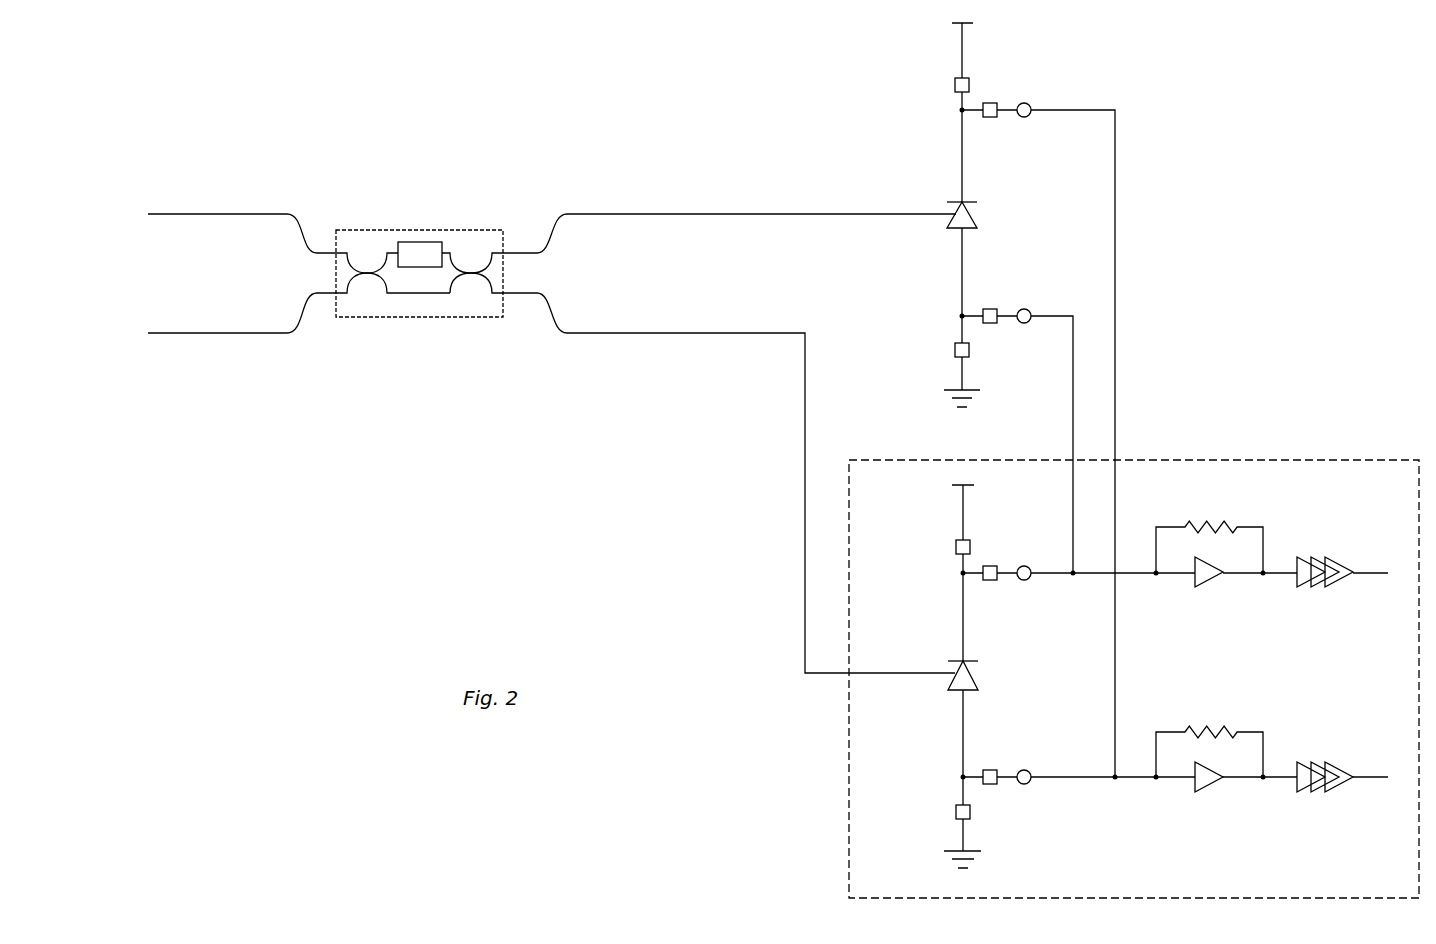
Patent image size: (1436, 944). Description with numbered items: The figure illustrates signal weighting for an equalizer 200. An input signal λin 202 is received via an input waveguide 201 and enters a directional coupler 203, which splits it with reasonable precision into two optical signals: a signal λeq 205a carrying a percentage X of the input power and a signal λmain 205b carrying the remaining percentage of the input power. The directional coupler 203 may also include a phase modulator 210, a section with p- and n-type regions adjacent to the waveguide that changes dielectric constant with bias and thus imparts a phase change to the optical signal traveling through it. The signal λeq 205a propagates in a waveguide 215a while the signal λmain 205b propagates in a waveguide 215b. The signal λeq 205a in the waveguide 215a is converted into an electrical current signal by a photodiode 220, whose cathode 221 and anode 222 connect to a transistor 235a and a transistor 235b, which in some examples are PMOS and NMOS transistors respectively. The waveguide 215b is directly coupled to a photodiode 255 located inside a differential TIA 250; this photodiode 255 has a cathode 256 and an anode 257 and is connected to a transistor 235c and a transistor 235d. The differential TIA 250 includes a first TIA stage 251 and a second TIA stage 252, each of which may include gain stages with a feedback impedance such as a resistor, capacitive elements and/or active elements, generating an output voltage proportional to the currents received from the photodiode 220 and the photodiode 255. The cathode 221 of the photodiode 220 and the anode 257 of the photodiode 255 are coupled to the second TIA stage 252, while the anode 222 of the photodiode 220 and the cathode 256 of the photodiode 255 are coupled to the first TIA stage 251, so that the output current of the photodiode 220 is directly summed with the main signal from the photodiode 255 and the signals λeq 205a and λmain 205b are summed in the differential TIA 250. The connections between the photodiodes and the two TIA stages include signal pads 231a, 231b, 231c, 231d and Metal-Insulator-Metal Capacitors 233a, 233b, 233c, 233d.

The equalizer 200 is at (1262, 93).
The input waveguide 201 is at (180, 214).
The input signal λin 202 is at (237, 178).
The directional coupler 203 is at (488, 230).
The phase modulator 210 is at (418, 242).
The signal λeq 205a is at (633, 178).
The signal λmain 205b is at (622, 378).
The waveguide 215a is at (728, 213).
The waveguide 215b is at (727, 333).
The photodiode 220 is at (965, 215).
The cathode 221 is at (962, 200).
The anode 222 is at (962, 232).
The signal pad 231a is at (990, 103).
The signal pad 231b is at (990, 309).
The signal pad 231c is at (990, 566).
The signal pad 231d is at (990, 770).
The Metal-Insulator-Metal Capacitor 233a is at (1025, 117).
The Metal-Insulator-Metal Capacitor 233b is at (1025, 323).
The Metal-Insulator-Metal Capacitor 233c is at (1025, 580).
The Metal-Insulator-Metal Capacitor 233d is at (1025, 784).
The transistor 235a is at (955, 82).
The transistor 235b is at (955, 348).
The transistor 235c is at (956, 545).
The transistor 235d is at (956, 810).
The differential TIA 250 is at (1320, 460).
The first TIA stage 251 is at (1210, 577).
The second TIA stage 252 is at (1210, 782).
The photodiode 255 is at (965, 675).
The cathode 256 is at (963, 660).
The anode 257 is at (963, 693).